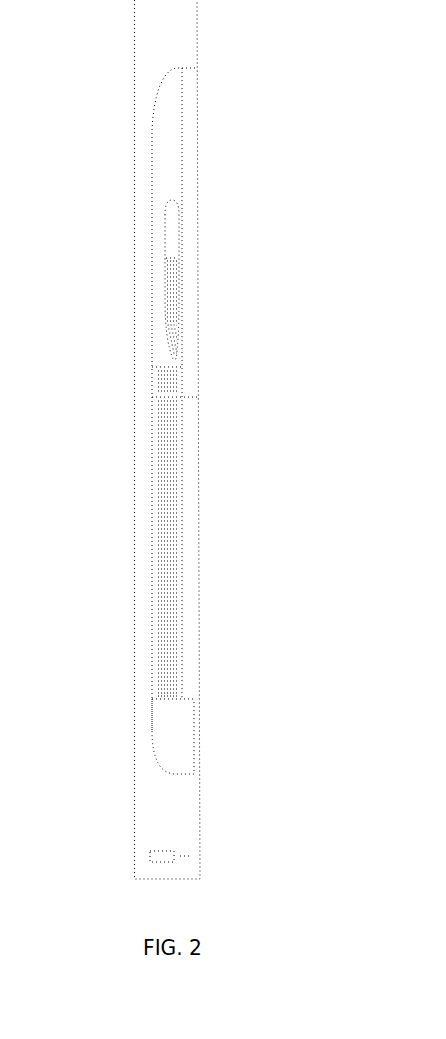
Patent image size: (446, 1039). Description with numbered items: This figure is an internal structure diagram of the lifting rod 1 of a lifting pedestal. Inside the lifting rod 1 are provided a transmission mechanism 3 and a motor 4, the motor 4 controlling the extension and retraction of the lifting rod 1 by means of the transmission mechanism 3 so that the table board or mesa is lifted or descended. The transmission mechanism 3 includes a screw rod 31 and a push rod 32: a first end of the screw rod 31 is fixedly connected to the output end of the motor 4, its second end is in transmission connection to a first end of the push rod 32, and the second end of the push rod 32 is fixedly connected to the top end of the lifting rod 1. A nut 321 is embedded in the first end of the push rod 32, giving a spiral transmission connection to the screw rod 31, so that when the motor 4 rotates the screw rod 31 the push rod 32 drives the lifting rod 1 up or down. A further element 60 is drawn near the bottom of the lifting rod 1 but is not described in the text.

The lifting rod 1 is at (140, 410).
The transmission mechanism 3 is at (182, 232).
The motor 4 is at (187, 742).
The screw rod 31 is at (167, 422).
The push rod 32 is at (165, 200).
The bottom fitting 60 is at (168, 857).
The nut 321 is at (177, 360).